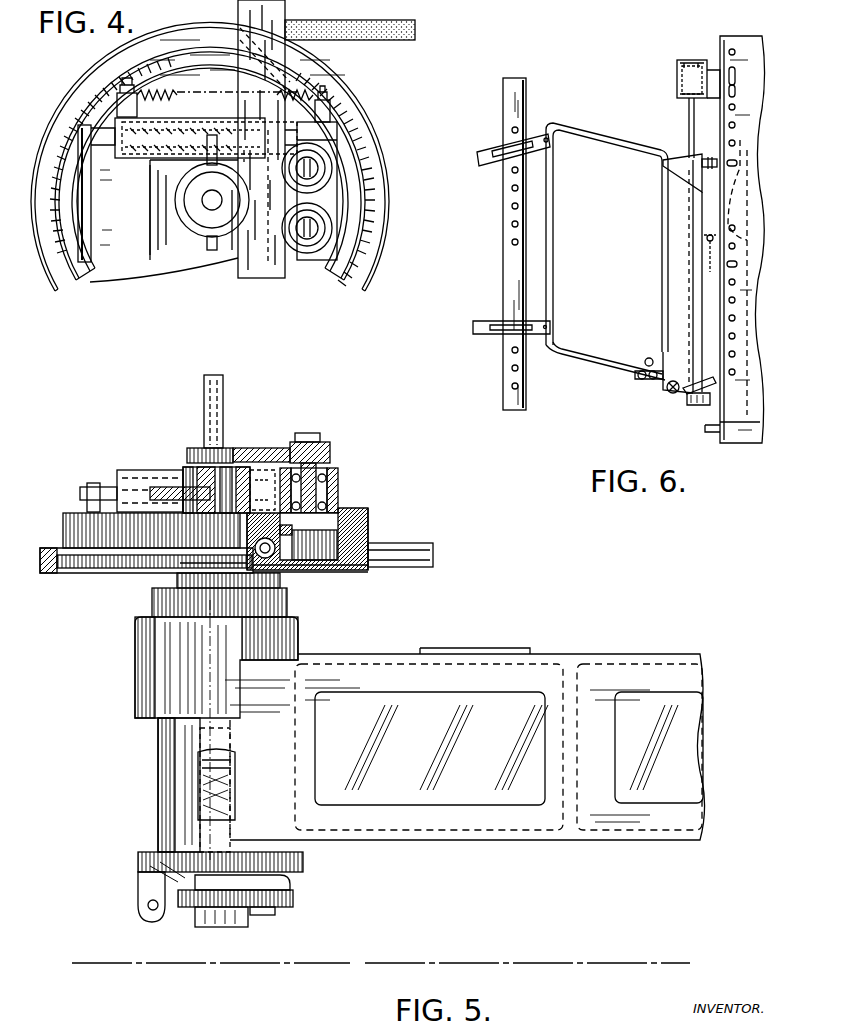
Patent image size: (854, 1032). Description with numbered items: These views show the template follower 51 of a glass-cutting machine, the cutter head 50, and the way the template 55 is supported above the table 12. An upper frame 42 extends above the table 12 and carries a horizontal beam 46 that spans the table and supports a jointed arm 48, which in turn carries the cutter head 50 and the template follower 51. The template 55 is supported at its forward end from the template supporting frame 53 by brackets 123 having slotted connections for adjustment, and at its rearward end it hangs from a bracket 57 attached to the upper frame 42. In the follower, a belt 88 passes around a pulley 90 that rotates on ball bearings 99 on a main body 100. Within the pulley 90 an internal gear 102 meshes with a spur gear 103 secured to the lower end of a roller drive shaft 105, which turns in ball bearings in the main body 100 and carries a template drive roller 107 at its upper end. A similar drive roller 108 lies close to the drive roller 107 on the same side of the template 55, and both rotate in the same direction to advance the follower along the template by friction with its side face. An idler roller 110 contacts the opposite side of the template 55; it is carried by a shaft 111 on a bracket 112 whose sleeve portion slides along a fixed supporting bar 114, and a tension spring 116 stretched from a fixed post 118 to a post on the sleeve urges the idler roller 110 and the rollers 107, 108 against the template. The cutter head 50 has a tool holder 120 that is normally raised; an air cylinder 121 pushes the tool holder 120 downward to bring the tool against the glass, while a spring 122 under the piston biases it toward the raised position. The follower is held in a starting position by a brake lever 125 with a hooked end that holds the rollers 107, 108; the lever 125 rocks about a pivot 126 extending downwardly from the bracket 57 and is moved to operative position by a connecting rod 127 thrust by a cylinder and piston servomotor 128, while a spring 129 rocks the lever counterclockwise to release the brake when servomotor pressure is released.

In FIG. 5, the table 12 is at (435, 962).
In FIG. 6, the upper frame 42 is at (769, 122).
In FIG. 6, the horizontal beam 46 is at (752, 196).
In FIG. 5, the jointed arm 48 is at (655, 652).
In FIG. 5, the cutter head 50 is at (313, 901).
In FIG. 5, the template follower 51 is at (64, 498).
In FIG. 6, the template supporting frame 53 is at (530, 402).
In FIG. 4, the template 55 is at (268, 280).
In FIG. 6, the template 55 is at (554, 229).
In FIG. 5, the template 55 is at (262, 448).
In FIG. 6, the bracket 57 is at (681, 178).
In FIG. 4, the belt 88 is at (415, 33).
In FIG. 5, the belt 88 is at (430, 545).
In FIG. 4, the pulley 90 is at (374, 116).
In FIG. 5, the pulley 90 is at (368, 568).
In FIG. 5, the ball bearings 99 is at (275, 570).
In FIG. 5, the main body 100 is at (340, 490).
In FIG. 5, the internal gear 102 is at (370, 545).
In FIG. 5, the spur gear 103 is at (350, 513).
In FIG. 5, the roller drive shaft 105 is at (342, 472).
In FIG. 4, the template drive roller 107 is at (328, 231).
In FIG. 6, the template drive roller 107 is at (636, 375).
In FIG. 5, the template drive roller 107 is at (330, 448).
In FIG. 4, the drive roller 108 is at (334, 178).
In FIG. 6, the drive roller 108 is at (660, 382).
In FIG. 4, the idler roller 110 is at (207, 218).
In FIG. 6, the idler roller 110 is at (647, 356).
In FIG. 4, the shaft 111 is at (205, 200).
In FIG. 4, the bracket 112 is at (182, 158).
In FIG. 4, the fixed supporting bar 114 is at (94, 128).
In FIG. 5, the fixed supporting bar 114 is at (108, 483).
In FIG. 4, the tension spring 116 is at (298, 93).
In FIG. 4, the fixed post 118 is at (322, 104).
In FIG. 5, the tool holder 120 is at (248, 925).
In FIG. 5, the air cylinder 121 is at (205, 828).
In FIG. 5, the spring 122 is at (232, 793).
In FIG. 6, the brackets 123 is at (479, 167).
In FIG. 6, the brake lever 125 is at (688, 398).
In FIG. 6, the pivot 126 is at (670, 390).
In FIG. 6, the connecting rod 127 is at (688, 135).
In FIG. 6, the cylinder and piston servomotor 128 is at (680, 88).
In FIG. 6, the spring 129 is at (695, 383).